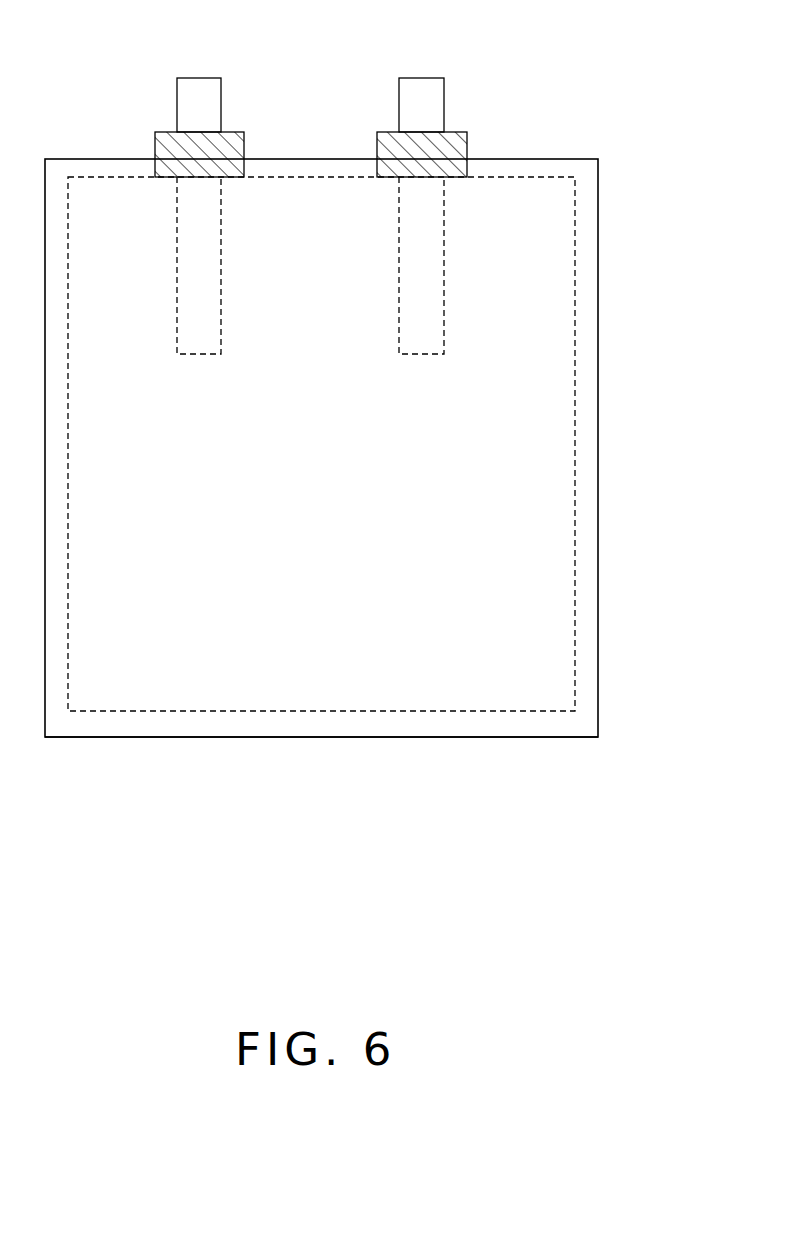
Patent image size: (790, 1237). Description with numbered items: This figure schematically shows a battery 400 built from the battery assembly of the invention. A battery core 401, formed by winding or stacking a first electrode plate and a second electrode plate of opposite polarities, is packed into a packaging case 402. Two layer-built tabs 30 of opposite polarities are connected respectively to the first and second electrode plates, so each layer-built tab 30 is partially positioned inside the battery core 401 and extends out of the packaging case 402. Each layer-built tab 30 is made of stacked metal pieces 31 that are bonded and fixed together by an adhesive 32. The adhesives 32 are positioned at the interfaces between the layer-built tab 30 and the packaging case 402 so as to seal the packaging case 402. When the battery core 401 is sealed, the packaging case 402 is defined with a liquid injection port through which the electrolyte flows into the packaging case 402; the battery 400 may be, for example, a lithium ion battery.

The layer-built tab 30 is at (343, 100).
The metal piece 31 is at (208, 102).
The adhesive 32 is at (235, 152).
The battery 400 is at (525, 131).
The battery core 401 is at (92, 177).
The packaging case 402 is at (506, 738).